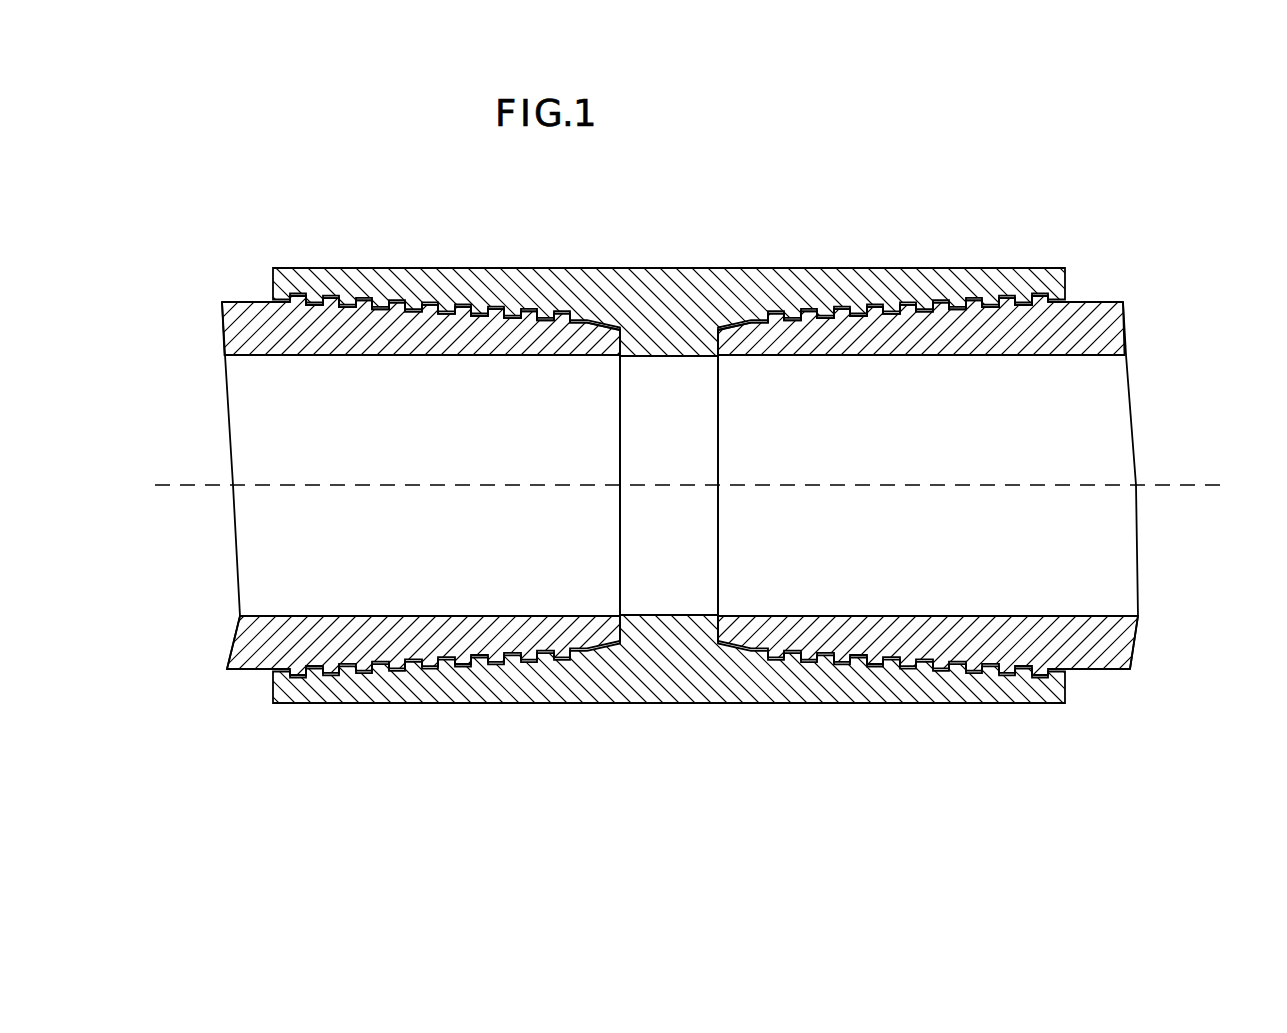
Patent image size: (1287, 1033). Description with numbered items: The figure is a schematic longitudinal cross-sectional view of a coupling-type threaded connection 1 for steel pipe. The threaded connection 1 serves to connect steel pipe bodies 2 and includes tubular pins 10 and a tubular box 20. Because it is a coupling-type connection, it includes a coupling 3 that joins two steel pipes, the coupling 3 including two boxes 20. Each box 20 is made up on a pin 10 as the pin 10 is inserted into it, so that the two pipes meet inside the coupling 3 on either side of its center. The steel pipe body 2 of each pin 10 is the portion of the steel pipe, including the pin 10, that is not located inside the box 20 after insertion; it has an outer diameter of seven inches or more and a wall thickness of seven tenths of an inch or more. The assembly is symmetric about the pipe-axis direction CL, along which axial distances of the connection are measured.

The threaded connection 1 is at (643, 436).
The steel pipe body 2 is at (258, 322).
The coupling 3 is at (697, 288).
The tubular pin 10 is at (379, 427).
The tubular box 20 is at (365, 185).
The pipe-axis direction CL is at (1185, 484).